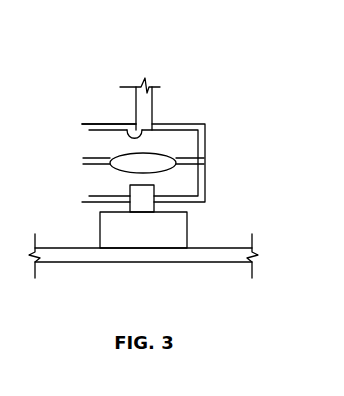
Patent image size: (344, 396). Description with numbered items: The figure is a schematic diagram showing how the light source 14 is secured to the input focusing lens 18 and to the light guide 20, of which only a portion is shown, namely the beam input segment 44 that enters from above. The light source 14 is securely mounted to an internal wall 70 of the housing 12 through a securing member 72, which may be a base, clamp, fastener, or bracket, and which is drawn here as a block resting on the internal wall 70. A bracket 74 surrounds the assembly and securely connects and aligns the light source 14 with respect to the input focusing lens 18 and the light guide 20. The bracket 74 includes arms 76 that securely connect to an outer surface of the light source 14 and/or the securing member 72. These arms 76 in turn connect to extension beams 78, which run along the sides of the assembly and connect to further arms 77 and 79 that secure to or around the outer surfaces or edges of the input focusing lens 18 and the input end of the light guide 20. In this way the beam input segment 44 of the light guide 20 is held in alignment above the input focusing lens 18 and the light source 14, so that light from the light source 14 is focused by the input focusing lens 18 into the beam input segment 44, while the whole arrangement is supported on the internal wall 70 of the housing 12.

The housing 12 is at (233, 263).
The light source 14 is at (143, 200).
The input focusing lens 18 is at (158, 156).
The light guide 20 is at (153, 96).
The beam input segment 44 is at (137, 93).
The internal wall 70 is at (242, 248).
The securing member 72 is at (106, 242).
The bracket 74 is at (82, 193).
The arms 76 is at (96, 208).
The arms 77 is at (82, 159).
The extension beams 78 is at (82, 141).
The arms 79 is at (82, 125).